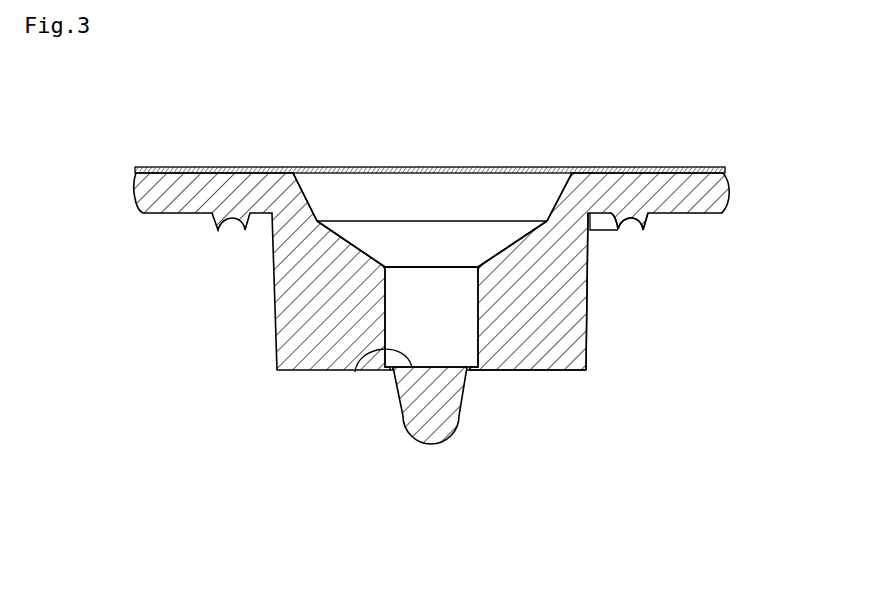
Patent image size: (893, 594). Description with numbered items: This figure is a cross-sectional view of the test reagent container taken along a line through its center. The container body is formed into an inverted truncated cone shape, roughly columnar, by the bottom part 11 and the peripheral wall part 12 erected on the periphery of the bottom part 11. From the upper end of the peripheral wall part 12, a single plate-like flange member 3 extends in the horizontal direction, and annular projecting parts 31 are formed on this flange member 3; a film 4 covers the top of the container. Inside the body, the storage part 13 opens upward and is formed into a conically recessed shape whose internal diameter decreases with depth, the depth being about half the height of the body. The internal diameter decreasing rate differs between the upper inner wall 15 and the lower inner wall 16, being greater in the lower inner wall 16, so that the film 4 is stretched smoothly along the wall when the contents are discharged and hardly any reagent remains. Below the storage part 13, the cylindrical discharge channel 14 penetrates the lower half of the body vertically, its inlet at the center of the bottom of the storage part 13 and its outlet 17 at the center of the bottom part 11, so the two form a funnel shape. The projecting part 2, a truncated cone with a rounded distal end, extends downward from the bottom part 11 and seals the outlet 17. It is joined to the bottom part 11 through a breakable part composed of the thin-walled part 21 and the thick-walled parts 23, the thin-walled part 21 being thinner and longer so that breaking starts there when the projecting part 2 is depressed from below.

The projecting part 2 is at (460, 421).
The flange member 3 is at (703, 215).
The film 4 is at (343, 167).
The bottom part 11 is at (560, 372).
The peripheral wall part 12 is at (593, 311).
The storage part 13 is at (430, 193).
The discharge channel 14 is at (403, 315).
The upper inner wall 15 is at (557, 203).
The lower inner wall 16 is at (490, 265).
The outlet of the discharge channel 17 is at (357, 372).
The thin-walled part 21 is at (478, 370).
The thick-walled part 23 is at (393, 371).
The annular projecting parts 31 is at (648, 220).